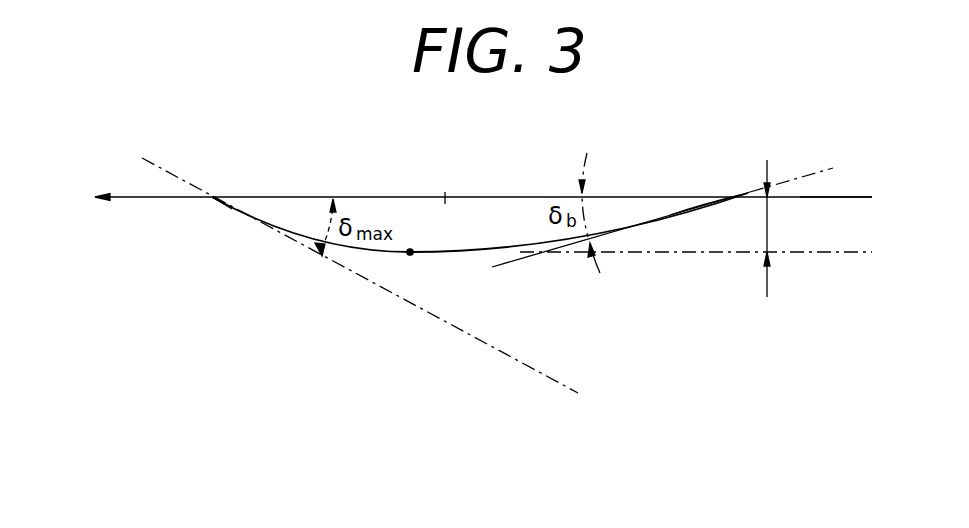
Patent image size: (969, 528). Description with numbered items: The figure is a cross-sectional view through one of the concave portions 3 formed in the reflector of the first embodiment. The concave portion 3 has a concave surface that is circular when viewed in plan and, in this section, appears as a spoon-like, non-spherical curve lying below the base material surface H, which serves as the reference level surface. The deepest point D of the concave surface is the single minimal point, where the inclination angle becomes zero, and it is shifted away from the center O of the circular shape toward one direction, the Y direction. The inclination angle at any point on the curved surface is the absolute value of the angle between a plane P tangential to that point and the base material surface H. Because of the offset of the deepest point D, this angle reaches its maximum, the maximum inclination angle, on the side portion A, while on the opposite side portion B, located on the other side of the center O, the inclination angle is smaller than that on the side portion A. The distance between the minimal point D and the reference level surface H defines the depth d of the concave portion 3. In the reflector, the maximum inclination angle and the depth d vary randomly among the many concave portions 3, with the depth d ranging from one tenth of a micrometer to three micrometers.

The concave portion 3 is at (423, 253).
The plane tangential to a point on a curved surface P is at (146, 147).
The side portion A is at (233, 210).
The side portion B is at (677, 213).
The deepest point (minimal point) D is at (412, 270).
The center of the circular shape O is at (445, 184).
The Y direction Y is at (471, 198).
The base material surface (reference level surface) H is at (837, 183).
The depth of the concave portion d is at (777, 228).